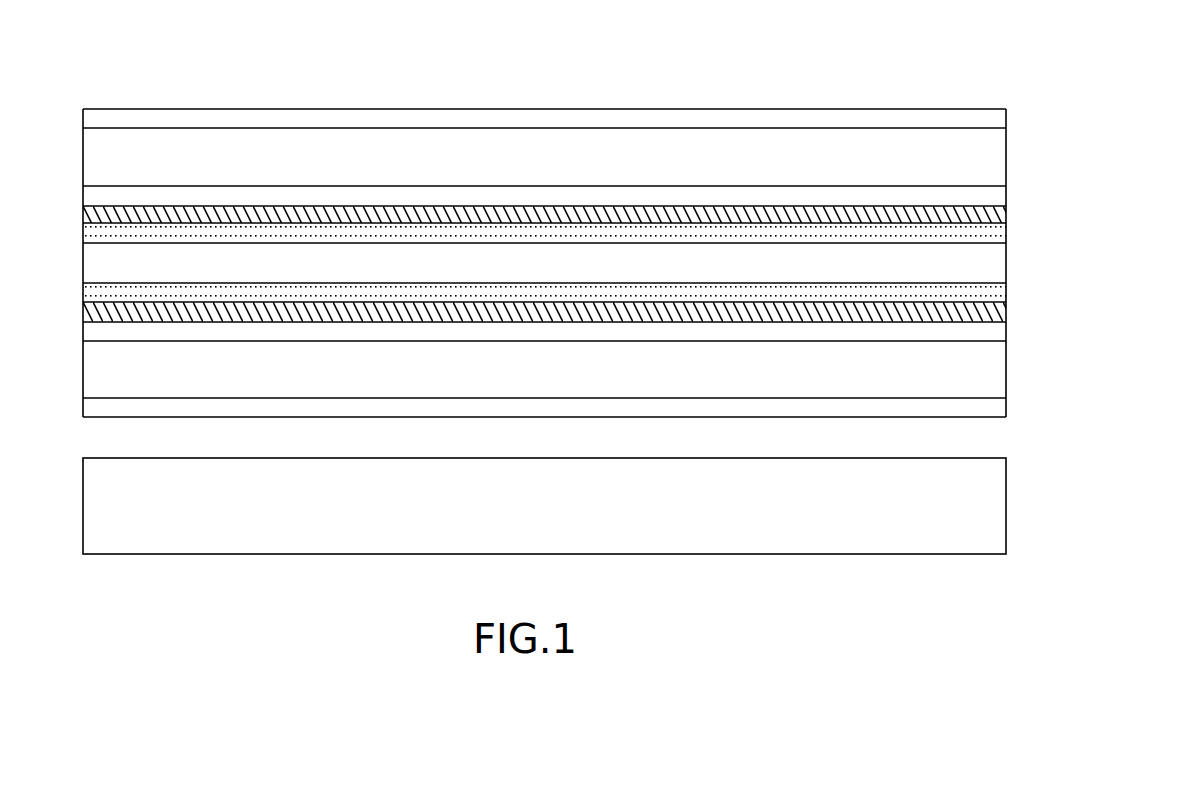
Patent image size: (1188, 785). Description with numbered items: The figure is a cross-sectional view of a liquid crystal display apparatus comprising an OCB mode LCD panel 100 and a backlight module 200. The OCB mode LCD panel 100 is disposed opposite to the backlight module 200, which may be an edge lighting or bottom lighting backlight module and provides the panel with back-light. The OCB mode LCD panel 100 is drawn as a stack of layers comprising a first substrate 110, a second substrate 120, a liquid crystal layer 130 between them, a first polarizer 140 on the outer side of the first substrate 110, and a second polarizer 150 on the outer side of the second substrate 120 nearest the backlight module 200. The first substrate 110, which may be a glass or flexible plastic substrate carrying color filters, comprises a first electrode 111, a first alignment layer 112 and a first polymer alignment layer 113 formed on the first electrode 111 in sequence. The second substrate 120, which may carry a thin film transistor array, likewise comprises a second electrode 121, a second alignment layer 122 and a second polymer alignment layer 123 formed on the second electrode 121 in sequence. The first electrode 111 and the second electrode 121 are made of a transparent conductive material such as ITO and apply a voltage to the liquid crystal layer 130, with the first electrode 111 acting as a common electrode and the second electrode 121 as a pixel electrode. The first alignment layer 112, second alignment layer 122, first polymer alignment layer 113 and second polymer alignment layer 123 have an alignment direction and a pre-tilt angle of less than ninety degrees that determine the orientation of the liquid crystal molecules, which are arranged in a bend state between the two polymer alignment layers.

The OCB mode LCD panel 100 is at (1086, 90).
The first substrate 110 is at (988, 163).
The first electrode 111 is at (988, 202).
The first alignment layer 112 is at (990, 220).
The first polymer alignment layer 113 is at (988, 242).
The second substrate 120 is at (988, 385).
The second electrode 121 is at (988, 330).
The second alignment layer 122 is at (988, 320).
The second polymer alignment layer 123 is at (988, 295).
The liquid crystal layer 130 is at (988, 270).
The first polarizer 140 is at (988, 124).
The second polarizer 150 is at (982, 410).
The backlight module 200 is at (988, 510).